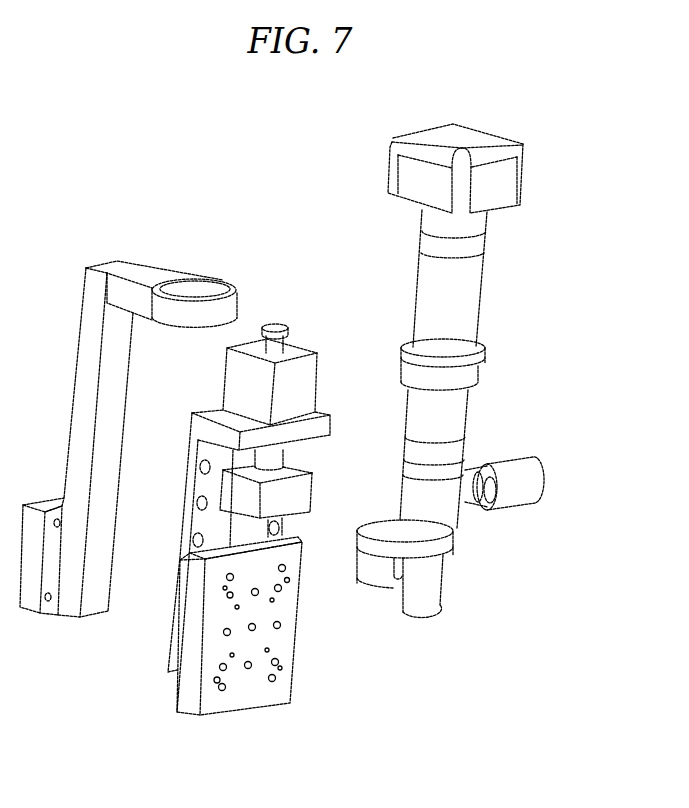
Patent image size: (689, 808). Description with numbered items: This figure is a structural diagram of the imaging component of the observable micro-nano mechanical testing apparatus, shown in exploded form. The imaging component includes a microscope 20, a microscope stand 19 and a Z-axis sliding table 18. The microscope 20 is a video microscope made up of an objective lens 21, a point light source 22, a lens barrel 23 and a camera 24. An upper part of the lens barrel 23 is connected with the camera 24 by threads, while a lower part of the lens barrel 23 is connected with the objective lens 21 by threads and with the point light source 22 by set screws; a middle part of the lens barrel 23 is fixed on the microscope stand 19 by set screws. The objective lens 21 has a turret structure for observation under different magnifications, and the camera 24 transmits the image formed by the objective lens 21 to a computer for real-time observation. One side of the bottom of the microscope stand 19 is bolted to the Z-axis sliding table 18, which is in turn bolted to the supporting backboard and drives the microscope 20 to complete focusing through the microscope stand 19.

The Z-axis sliding table 18 is at (300, 348).
The microscope stand 19 is at (153, 272).
The microscope 20 is at (480, 310).
The objective lens 21 is at (392, 565).
The point light source 22 is at (531, 485).
The lens barrel 23 is at (462, 425).
The camera 24 is at (503, 183).